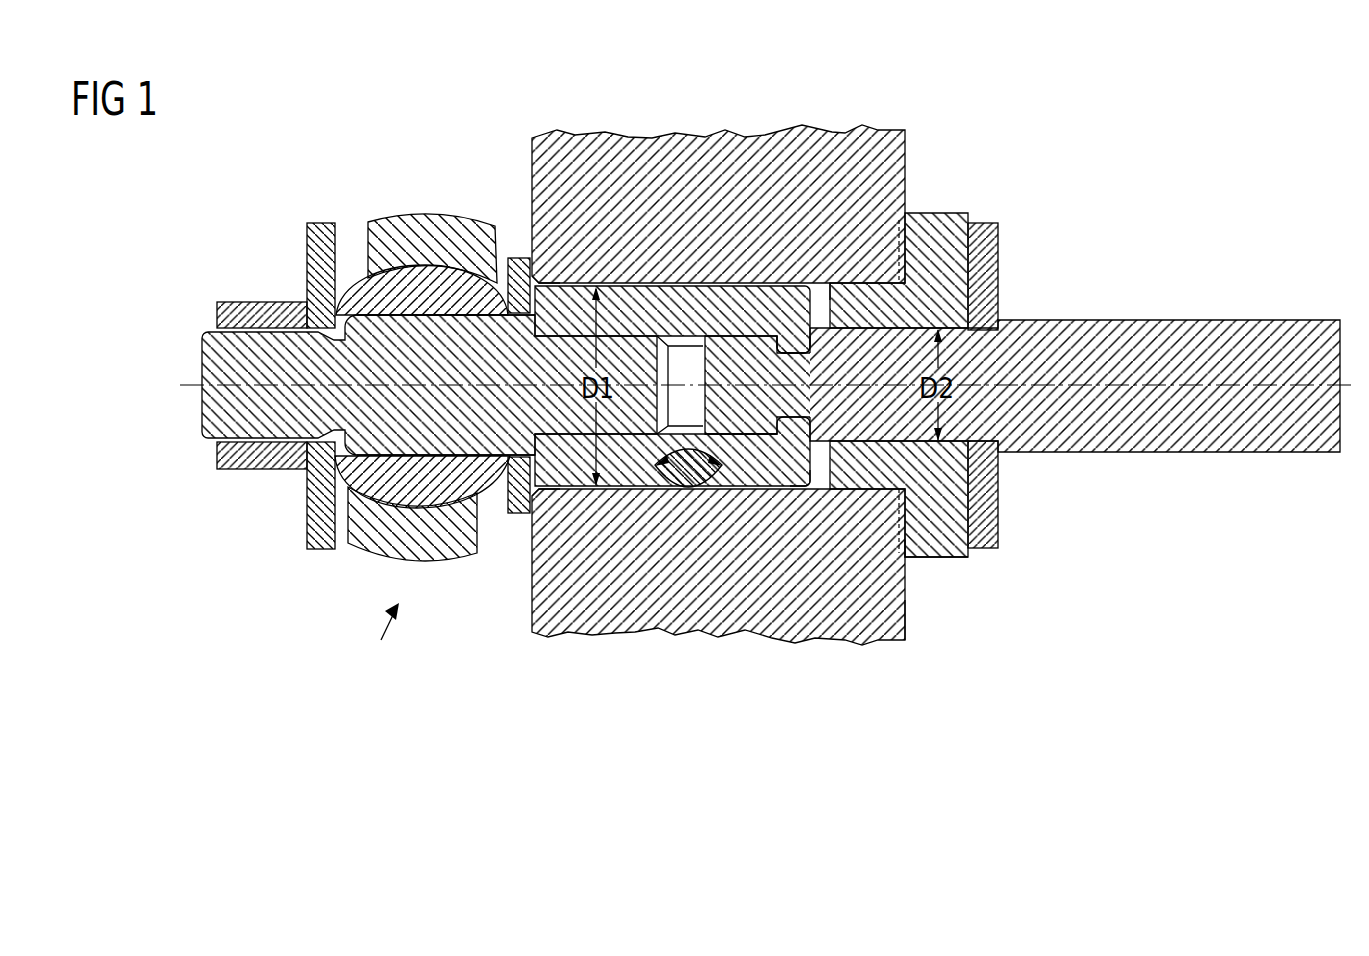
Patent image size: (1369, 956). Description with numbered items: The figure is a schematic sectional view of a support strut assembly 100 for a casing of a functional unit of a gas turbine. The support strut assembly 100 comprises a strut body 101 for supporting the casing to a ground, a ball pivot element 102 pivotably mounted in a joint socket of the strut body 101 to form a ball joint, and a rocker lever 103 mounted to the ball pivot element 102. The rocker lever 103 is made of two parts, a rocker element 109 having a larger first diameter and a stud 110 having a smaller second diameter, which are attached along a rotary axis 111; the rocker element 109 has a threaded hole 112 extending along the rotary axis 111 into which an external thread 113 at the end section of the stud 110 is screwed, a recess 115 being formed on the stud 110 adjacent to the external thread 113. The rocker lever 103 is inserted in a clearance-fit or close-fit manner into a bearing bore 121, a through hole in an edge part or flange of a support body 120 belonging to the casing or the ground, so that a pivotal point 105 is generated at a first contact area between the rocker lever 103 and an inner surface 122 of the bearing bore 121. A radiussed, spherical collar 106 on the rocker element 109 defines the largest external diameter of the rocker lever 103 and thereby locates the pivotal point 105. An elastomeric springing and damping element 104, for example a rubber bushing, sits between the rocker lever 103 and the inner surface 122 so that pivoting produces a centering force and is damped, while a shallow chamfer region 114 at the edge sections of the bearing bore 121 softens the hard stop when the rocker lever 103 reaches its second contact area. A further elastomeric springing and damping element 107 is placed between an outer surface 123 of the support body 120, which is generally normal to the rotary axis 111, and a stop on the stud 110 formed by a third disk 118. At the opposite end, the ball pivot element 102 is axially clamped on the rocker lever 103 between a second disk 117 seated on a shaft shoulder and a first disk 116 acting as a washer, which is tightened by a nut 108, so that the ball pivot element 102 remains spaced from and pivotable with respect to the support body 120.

The support strut assembly 100 is at (372, 645).
The strut body 101 is at (428, 218).
The ball pivot element 102 is at (365, 296).
The rocker lever 103 is at (440, 385).
The elastomeric springing and damping element 104 is at (899, 417).
The pivotal point 105 is at (691, 489).
The spherical collar 106 is at (690, 358).
The further elastomeric springing and damping element 107 is at (940, 557).
The nut 108 is at (252, 462).
The rocker element 109 is at (446, 385).
The stud 110 is at (1178, 322).
The rotary axis 111 is at (188, 388).
The threaded hole 112 is at (682, 397).
The external thread 113 is at (745, 440).
The shallow chamfer region 114 is at (537, 493).
The recess 115 is at (788, 335).
The first disk 116 is at (320, 549).
The second disk 117 is at (521, 259).
The third disk 118 is at (990, 259).
The support body 120 is at (758, 370).
The bearing bore 121 is at (833, 283).
The inner surface 122 is at (812, 488).
The outer surface 123 is at (908, 626).